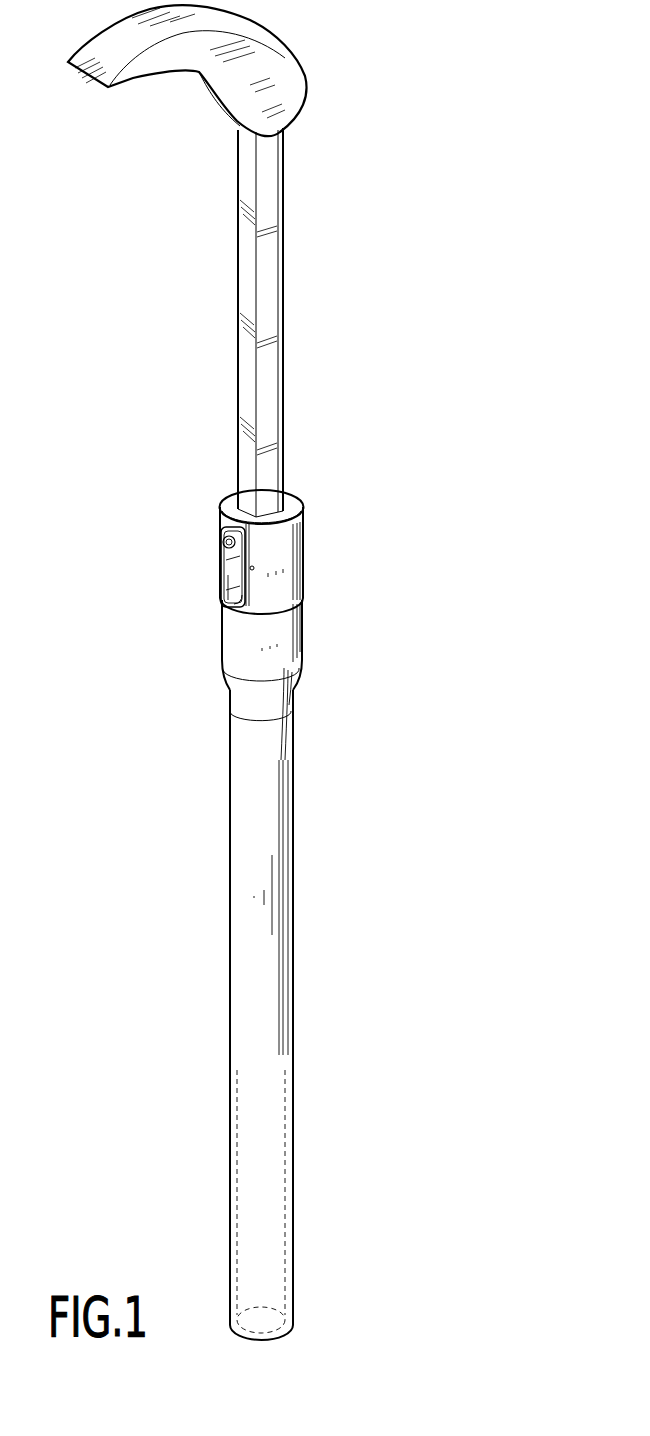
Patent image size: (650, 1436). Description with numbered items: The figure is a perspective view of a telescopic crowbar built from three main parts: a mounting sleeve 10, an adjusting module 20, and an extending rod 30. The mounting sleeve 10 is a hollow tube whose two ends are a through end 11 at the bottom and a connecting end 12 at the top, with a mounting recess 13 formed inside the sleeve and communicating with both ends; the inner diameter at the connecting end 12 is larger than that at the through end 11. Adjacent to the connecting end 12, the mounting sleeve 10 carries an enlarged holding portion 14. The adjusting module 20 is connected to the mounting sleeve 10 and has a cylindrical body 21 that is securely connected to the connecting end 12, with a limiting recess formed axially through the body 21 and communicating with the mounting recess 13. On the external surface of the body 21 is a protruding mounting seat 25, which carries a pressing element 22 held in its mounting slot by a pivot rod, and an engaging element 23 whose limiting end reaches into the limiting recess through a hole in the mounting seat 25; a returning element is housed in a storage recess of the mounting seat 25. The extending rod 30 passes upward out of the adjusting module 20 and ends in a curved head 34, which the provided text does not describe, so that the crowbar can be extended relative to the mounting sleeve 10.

The mounting sleeve 10 is at (333, 945).
The through end 11 is at (278, 1338).
The connecting end 12 is at (290, 604).
The mounting recess 13 is at (285, 1195).
The holding portion 14 is at (240, 692).
The adjusting module 20 is at (272, 564).
The body 21 is at (310, 541).
The pressing element 22 is at (214, 590).
The engaging element 23 is at (212, 541).
The mounting seat 25 is at (262, 610).
The extending rod 30 is at (310, 290).
The curved head 34 is at (263, 63).